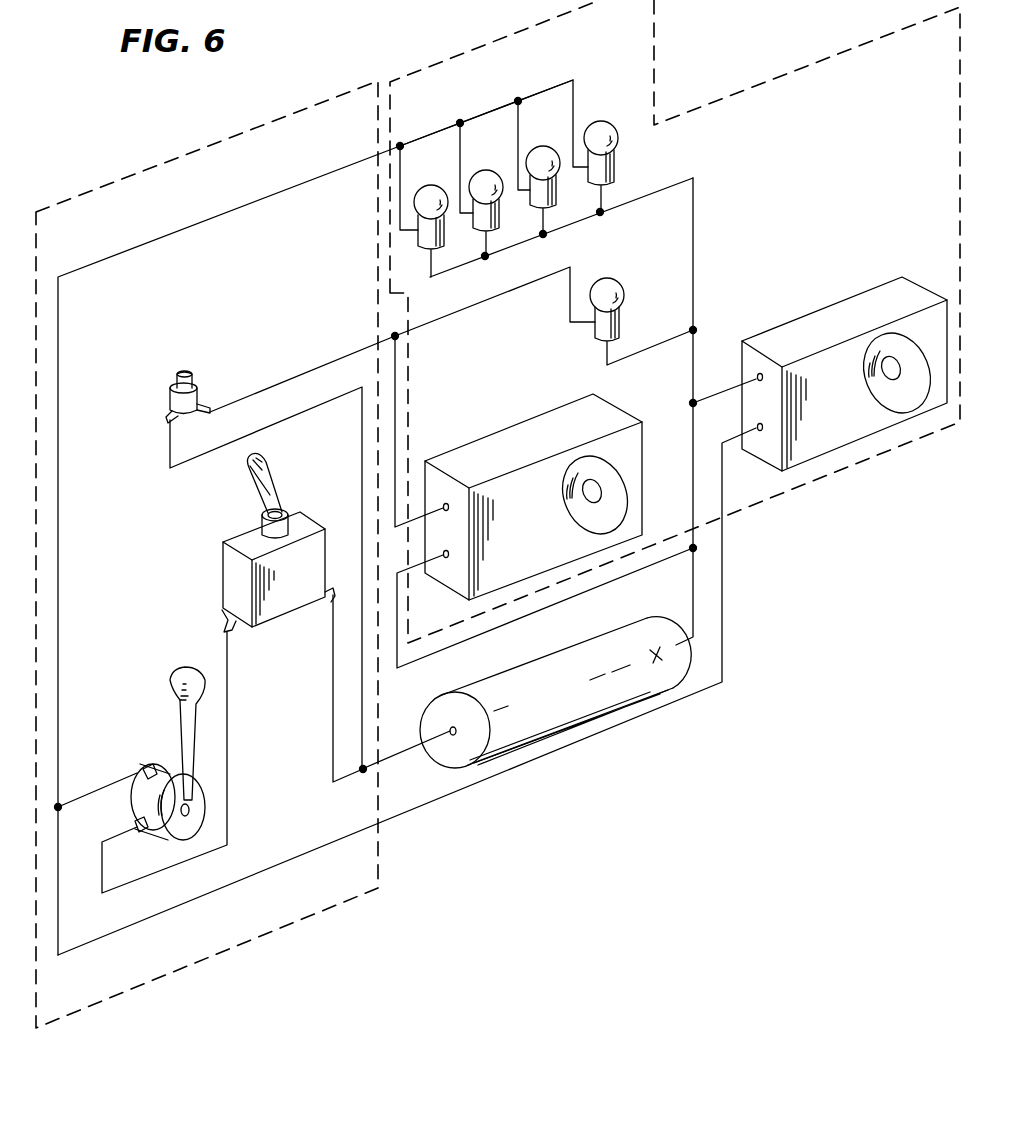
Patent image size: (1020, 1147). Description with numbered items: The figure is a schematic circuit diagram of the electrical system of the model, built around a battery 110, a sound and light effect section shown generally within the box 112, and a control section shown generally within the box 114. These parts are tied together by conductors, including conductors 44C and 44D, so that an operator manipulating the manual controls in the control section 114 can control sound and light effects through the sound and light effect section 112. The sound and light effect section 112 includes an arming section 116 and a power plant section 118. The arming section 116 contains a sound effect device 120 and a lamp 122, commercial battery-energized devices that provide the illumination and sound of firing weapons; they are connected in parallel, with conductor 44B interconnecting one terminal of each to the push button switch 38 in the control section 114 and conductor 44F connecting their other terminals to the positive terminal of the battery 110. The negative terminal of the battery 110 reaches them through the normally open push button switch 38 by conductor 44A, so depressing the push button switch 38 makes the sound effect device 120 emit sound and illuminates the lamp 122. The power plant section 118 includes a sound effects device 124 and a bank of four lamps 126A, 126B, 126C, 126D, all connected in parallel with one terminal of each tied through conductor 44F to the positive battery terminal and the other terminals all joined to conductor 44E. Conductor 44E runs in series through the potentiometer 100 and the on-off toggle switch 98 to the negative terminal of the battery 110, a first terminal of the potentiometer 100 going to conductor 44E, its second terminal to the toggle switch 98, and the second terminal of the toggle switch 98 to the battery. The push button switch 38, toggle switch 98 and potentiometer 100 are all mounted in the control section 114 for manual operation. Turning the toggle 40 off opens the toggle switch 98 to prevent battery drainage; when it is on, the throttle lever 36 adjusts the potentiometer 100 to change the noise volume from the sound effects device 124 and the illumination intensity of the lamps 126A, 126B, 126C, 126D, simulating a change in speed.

The control section 114 is at (188, 190).
The sound and light effect section 112 is at (694, 120).
The conductor 44E is at (276, 194).
The conductor 44A is at (239, 449).
The conductor 44B is at (253, 396).
The conductor 44C is at (604, 588).
The conductor 44D is at (333, 703).
The conductor 44F is at (697, 357).
The push button switch 38 is at (182, 373).
The toggle 40 is at (263, 474).
The on-off toggle switch 98 is at (310, 527).
The throttle lever 36 is at (181, 678).
The potentiometer 100 is at (163, 763).
The battery 110 is at (552, 666).
The arming section 116 is at (590, 337).
The power plant section 118 is at (780, 292).
The sound effect device 120 is at (496, 446).
The lamp 122 is at (611, 286).
The sound effects device 124 is at (825, 300).
The lamp 126A is at (405, 200).
The lamp 126B is at (468, 180).
The lamp 126C is at (527, 158).
The lamp 126D is at (586, 134).